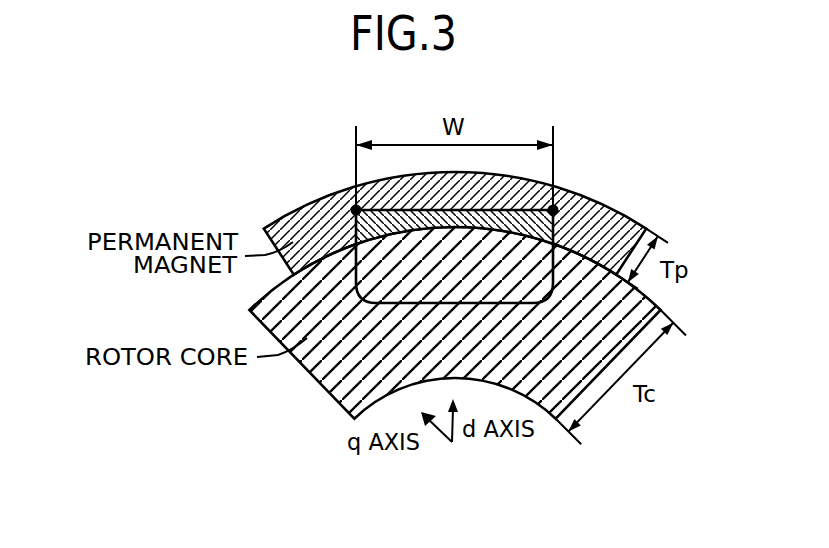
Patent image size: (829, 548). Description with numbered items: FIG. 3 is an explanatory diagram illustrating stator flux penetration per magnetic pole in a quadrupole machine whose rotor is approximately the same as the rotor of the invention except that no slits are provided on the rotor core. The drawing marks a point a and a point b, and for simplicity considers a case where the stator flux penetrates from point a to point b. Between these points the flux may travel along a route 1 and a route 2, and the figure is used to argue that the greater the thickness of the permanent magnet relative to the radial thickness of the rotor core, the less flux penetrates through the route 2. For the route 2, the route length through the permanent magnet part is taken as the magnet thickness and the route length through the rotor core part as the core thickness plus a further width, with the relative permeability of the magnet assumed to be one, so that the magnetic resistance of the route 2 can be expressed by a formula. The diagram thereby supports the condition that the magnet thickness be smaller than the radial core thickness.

The route 1 is at (457, 214).
The route 2 is at (456, 306).
The point a is at (564, 214).
The point b is at (342, 215).